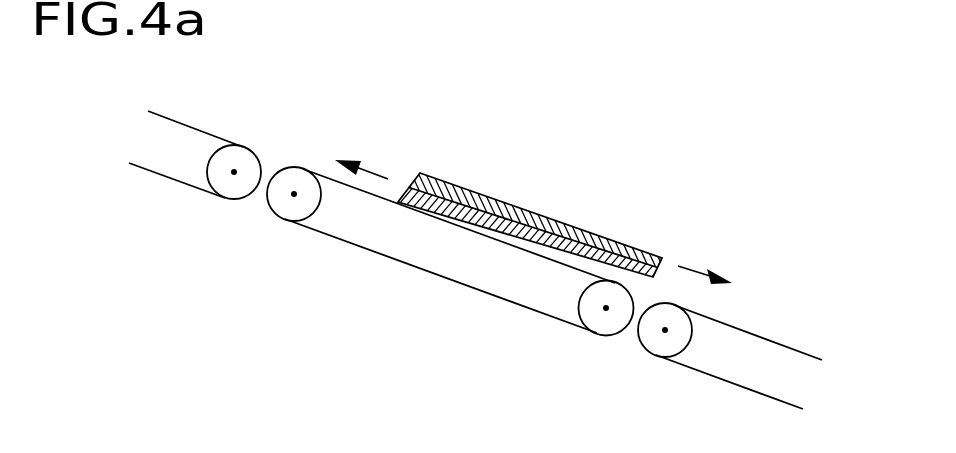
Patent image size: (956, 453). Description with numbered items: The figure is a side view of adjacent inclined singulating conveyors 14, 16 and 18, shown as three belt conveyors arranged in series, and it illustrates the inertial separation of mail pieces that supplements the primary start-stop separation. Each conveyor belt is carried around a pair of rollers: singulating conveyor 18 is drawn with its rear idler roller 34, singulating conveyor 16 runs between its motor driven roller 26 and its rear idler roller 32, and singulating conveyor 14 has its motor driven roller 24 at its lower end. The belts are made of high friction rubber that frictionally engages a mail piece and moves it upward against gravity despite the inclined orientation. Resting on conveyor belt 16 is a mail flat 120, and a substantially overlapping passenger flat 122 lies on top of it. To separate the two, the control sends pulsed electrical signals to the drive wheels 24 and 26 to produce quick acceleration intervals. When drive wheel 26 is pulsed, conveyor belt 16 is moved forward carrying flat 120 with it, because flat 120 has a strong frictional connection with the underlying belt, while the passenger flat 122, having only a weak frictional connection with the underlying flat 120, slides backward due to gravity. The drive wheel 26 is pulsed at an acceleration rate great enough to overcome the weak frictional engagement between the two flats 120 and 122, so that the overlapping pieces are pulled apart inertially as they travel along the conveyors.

The singulating conveyor 14 is at (755, 332).
The singulating conveyor 16 is at (380, 253).
The singulating conveyor 18 is at (165, 177).
The motor driven roller 24 is at (663, 348).
The motor driven roller 26 is at (283, 218).
The rear idler roller 32 is at (602, 327).
The rear idler roller 34 is at (238, 193).
The mail flat 120 is at (408, 190).
The passenger mail flat 122 is at (567, 223).